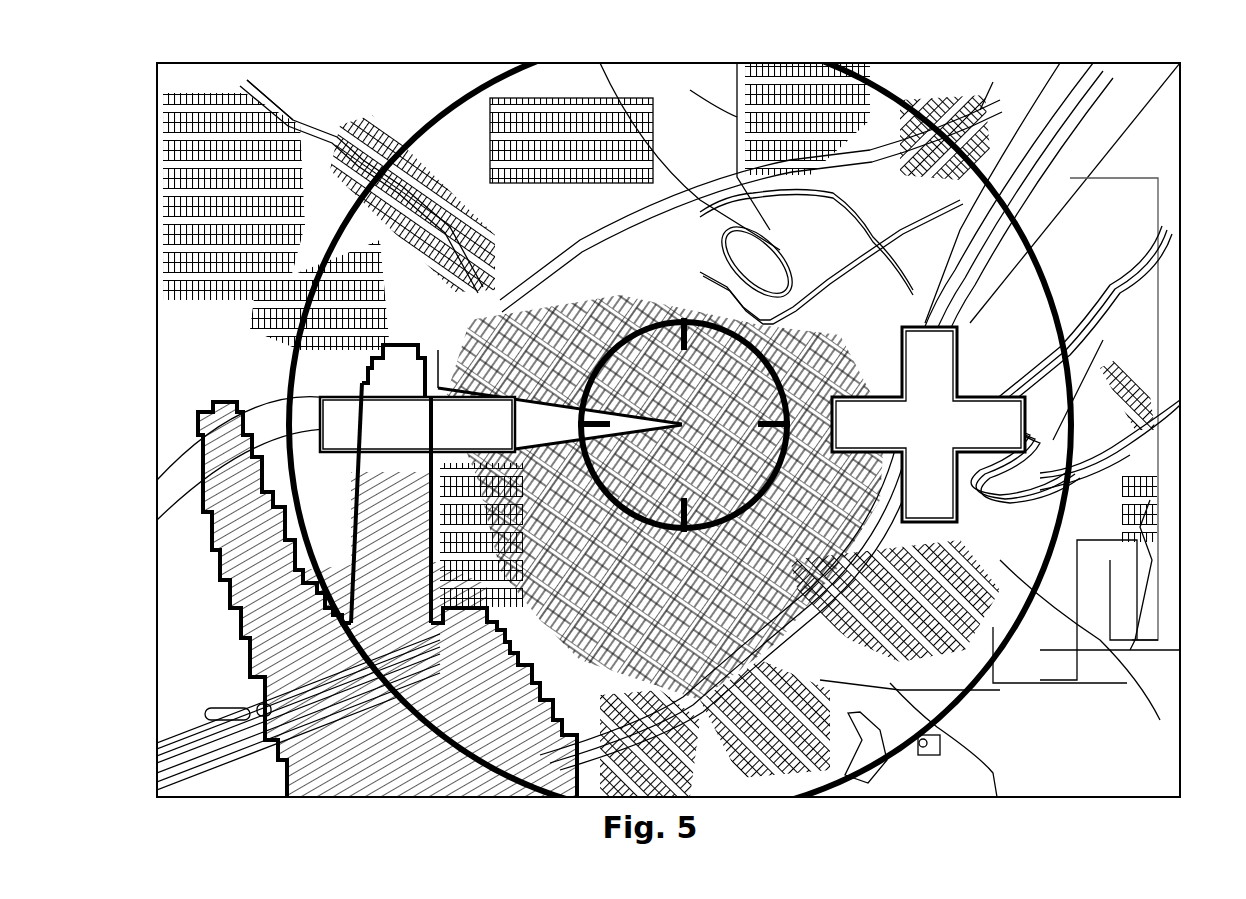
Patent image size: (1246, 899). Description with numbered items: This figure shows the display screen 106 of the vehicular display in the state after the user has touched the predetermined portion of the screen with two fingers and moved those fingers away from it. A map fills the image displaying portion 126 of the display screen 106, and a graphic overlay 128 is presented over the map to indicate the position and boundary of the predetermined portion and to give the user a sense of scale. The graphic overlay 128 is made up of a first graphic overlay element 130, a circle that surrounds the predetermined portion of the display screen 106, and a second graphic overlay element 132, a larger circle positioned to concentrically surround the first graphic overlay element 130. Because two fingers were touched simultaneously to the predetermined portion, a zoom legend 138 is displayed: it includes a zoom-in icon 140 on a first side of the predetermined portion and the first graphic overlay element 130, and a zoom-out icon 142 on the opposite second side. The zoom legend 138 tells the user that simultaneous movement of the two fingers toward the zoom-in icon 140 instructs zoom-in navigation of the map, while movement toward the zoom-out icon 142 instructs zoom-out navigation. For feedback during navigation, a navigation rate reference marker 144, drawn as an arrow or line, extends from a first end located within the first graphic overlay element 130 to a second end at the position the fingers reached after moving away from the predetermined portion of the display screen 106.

The display screen 106 is at (244, 72).
The image displaying portion 126 is at (452, 82).
The graphic overlay 128 is at (1035, 212).
The first graphic overlay element 130 is at (735, 345).
The second graphic overlay element 132 is at (995, 82).
The zoom legend 138 is at (942, 296).
The zoom-in icon 140 is at (1007, 417).
The zoom-out icon 142 is at (340, 430).
The navigation rate reference marker 144 is at (436, 380).